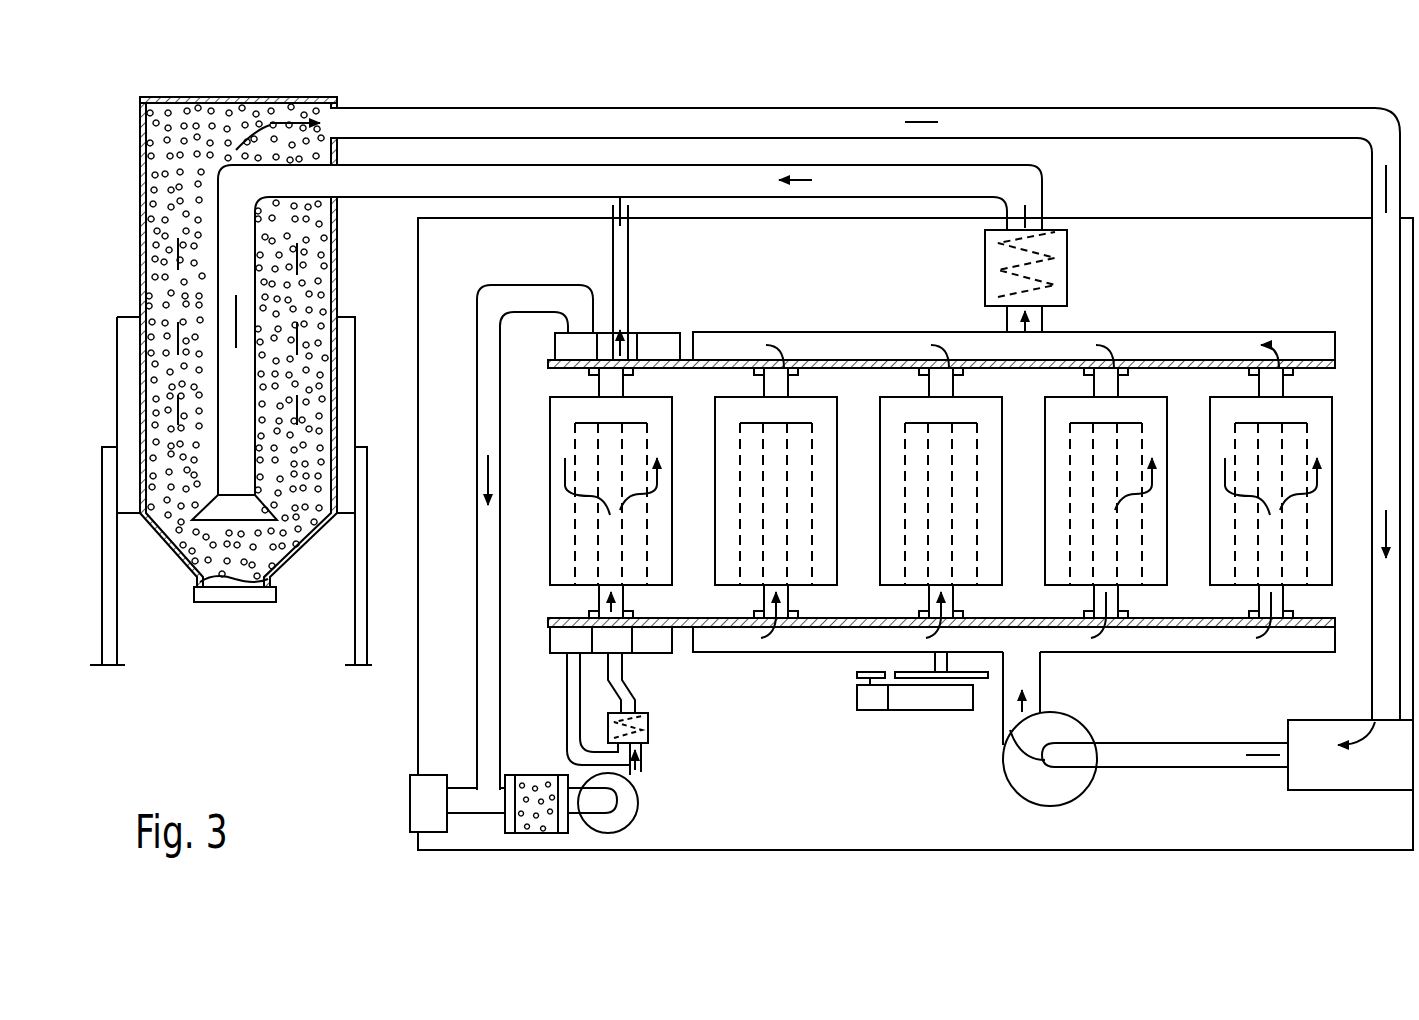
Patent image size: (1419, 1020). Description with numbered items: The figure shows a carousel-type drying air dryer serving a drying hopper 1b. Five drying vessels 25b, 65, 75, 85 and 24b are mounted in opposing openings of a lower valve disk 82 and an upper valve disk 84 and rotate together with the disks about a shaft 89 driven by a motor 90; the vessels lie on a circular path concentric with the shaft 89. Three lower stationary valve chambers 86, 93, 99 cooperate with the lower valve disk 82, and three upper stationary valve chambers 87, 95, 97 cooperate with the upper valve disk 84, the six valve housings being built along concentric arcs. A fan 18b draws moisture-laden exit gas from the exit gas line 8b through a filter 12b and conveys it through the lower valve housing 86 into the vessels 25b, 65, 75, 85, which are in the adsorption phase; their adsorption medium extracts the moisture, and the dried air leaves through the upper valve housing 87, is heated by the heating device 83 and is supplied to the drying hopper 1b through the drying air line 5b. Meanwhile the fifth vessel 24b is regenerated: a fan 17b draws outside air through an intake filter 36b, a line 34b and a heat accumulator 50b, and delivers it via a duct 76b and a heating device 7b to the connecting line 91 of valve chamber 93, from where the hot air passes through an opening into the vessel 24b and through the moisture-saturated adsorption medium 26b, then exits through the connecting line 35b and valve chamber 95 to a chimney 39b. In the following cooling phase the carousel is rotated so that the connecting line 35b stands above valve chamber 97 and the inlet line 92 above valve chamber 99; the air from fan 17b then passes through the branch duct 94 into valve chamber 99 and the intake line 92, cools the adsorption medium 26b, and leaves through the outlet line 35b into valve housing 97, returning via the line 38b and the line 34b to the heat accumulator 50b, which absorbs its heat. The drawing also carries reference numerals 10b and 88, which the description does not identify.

The drying hopper 1b is at (140, 210).
The drying air line 5b is at (546, 176).
The exit gas line 8b is at (1232, 120).
The housing 10b is at (416, 702).
The filter 12b is at (1300, 795).
The fan 17b is at (605, 826).
The fan 18b is at (1012, 785).
The drying vessel 24b is at (587, 491).
The drying vessel 25b is at (825, 398).
The adsorption medium 26b is at (582, 446).
The connecting line 34b is at (493, 815).
The connecting line 35b is at (600, 386).
The intake filter 36b is at (408, 790).
The line 38b is at (490, 441).
The chimney 39b is at (613, 265).
The heat accumulator 50b is at (535, 822).
The drying vessel 65 is at (896, 398).
The drying vessel 75 is at (1146, 398).
The duct 76b is at (643, 760).
The heating device 7b is at (648, 742).
The lower valve disk 82 is at (1318, 625).
The heating device 83 is at (1067, 283).
The upper valve disk 84 is at (1322, 370).
The drying vessel 85 is at (1236, 398).
The lower valve housing 86 is at (1190, 652).
The upper valve housing 87 is at (1185, 332).
The connecting block 88 is at (546, 646).
The shaft 89 is at (935, 662).
The motor 90 is at (950, 700).
The connecting line 91 is at (612, 682).
The inlet line 92 is at (600, 600).
The valve chamber 93 is at (626, 640).
The branch duct 94 is at (567, 745).
The valve chamber 95 is at (630, 352).
The valve chamber 97 is at (555, 350).
The valve chamber 99 is at (553, 641).